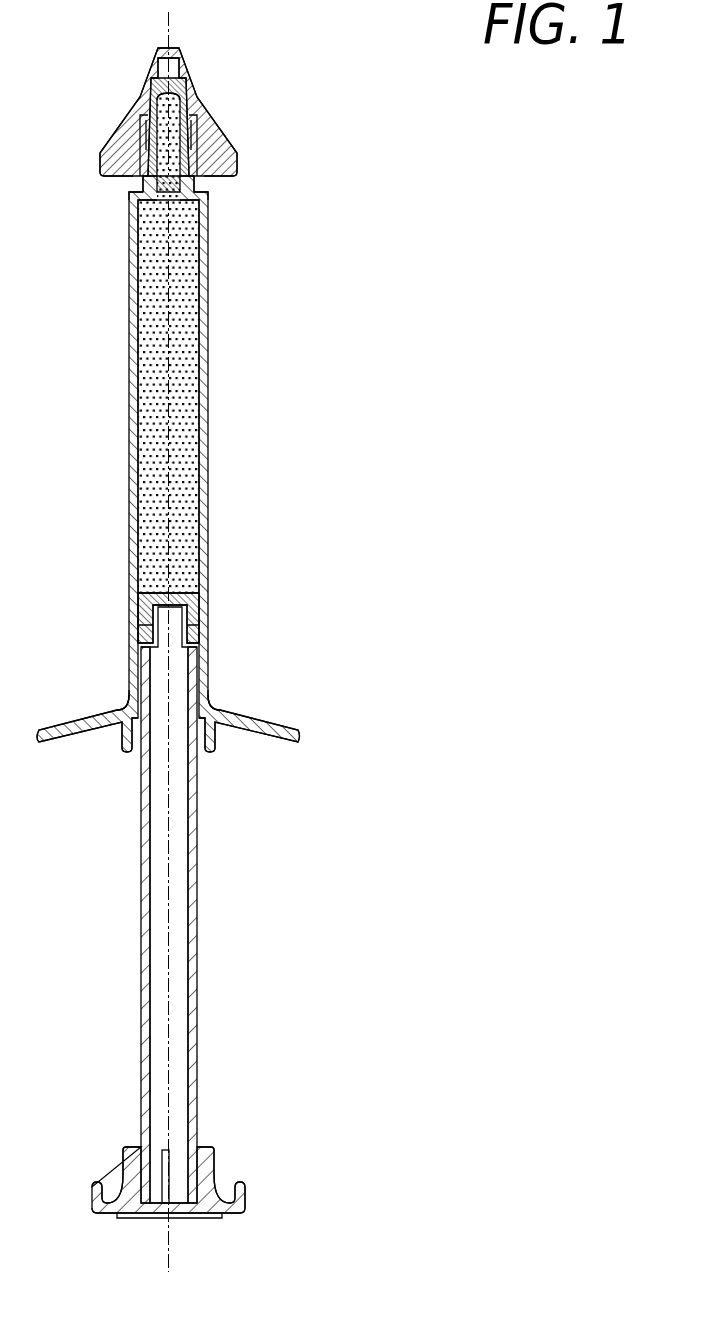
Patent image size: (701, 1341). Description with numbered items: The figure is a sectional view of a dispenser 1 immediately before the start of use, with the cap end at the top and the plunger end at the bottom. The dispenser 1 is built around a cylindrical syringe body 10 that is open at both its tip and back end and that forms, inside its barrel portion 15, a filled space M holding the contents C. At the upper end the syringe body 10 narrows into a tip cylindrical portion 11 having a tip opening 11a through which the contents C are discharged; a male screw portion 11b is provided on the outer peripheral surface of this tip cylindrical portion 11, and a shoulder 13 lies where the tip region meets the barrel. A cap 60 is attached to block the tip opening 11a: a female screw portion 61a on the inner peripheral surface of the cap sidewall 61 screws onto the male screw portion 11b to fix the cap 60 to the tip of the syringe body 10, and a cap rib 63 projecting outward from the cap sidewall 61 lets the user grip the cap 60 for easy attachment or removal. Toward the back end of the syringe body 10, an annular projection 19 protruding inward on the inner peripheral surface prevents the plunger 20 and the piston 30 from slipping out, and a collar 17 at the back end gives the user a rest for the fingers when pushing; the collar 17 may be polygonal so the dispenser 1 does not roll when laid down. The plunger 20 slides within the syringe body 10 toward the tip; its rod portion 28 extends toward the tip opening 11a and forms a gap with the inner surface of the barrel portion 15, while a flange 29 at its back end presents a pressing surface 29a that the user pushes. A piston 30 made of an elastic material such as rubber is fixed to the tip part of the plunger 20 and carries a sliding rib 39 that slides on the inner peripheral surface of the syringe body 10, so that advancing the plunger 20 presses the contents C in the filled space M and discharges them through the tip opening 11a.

The dispenser 1 is at (349, 68).
The syringe body 10 is at (213, 347).
The tip cylindrical portion 11 is at (183, 117).
The tip opening 11a is at (175, 78).
The male screw portion 11b is at (193, 163).
The shoulder 13 is at (203, 200).
The barrel portion 15 is at (205, 387).
The collar 17 is at (262, 720).
The annular projection 19 is at (131, 686).
The plunger 20 is at (211, 918).
The rod portion 28 is at (188, 852).
The flange 29 is at (238, 1210).
The pressing surface 29a is at (200, 1220).
The piston 30 is at (183, 584).
The sliding rib 39 is at (197, 636).
The cap 60 is at (200, 78).
The cap sidewall 61 is at (202, 136).
The female screw portion 61a is at (188, 128).
The cap rib 63 is at (103, 168).
The contents C is at (186, 522).
The filled space M is at (164, 418).